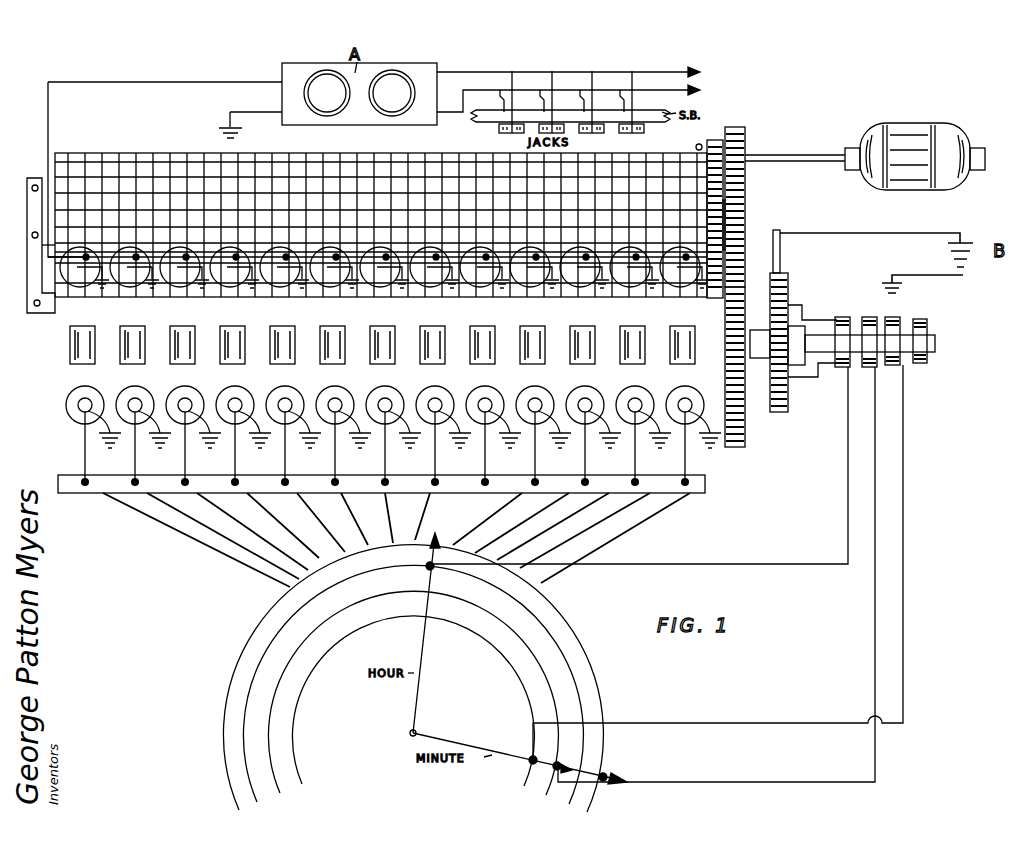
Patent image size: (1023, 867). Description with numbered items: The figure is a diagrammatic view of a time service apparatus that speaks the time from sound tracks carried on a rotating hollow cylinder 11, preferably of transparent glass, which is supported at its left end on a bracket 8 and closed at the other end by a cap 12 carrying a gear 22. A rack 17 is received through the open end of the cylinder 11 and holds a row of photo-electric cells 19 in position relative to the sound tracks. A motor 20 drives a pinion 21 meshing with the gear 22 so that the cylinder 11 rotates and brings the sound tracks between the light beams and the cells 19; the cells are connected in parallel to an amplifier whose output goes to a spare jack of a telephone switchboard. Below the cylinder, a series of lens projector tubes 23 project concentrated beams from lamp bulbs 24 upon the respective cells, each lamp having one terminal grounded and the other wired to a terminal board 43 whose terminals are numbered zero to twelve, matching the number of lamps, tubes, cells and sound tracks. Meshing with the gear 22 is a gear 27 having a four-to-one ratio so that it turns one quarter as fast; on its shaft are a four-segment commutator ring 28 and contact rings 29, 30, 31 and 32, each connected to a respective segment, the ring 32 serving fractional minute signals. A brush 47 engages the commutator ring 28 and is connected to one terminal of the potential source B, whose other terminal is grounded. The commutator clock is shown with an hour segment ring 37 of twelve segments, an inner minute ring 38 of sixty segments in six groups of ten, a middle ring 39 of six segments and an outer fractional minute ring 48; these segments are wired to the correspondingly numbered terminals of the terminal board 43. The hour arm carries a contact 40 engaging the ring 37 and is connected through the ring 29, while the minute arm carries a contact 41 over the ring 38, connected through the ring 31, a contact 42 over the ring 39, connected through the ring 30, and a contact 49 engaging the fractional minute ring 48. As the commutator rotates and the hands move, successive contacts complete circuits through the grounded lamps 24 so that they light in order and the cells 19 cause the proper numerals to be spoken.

The mounting bracket 8 is at (27, 283).
The hollow cylinder 11 is at (150, 154).
The cap 12 is at (714, 140).
The rack 17 is at (249, 240).
The photo-electric cells 19 is at (318, 263).
The motor 20 is at (903, 124).
The driving pinion 21 is at (748, 145).
The gear 22 is at (745, 224).
The lens projector tubes 23 is at (228, 324).
The lamp bulbs 24 is at (232, 390).
The gear 27 is at (750, 415).
The four-segment ring 28 is at (790, 382).
The contact ring 29 is at (844, 367).
The contact ring 30 is at (872, 367).
The contact ring 31 is at (895, 365).
The contact ring 32 is at (922, 363).
The hour segment ring 37 is at (275, 630).
The inner segment ring 38 is at (322, 650).
The middle segment ring 39 is at (535, 650).
The hour arm contact 40 is at (428, 562).
The minute arm contact 41 is at (528, 763).
The minute arm contact 42 is at (566, 766).
The terminal board 43 is at (92, 495).
The brush 47 is at (781, 242).
The fractional minute ring 48 is at (600, 681).
The minute arm contact 49 is at (605, 775).